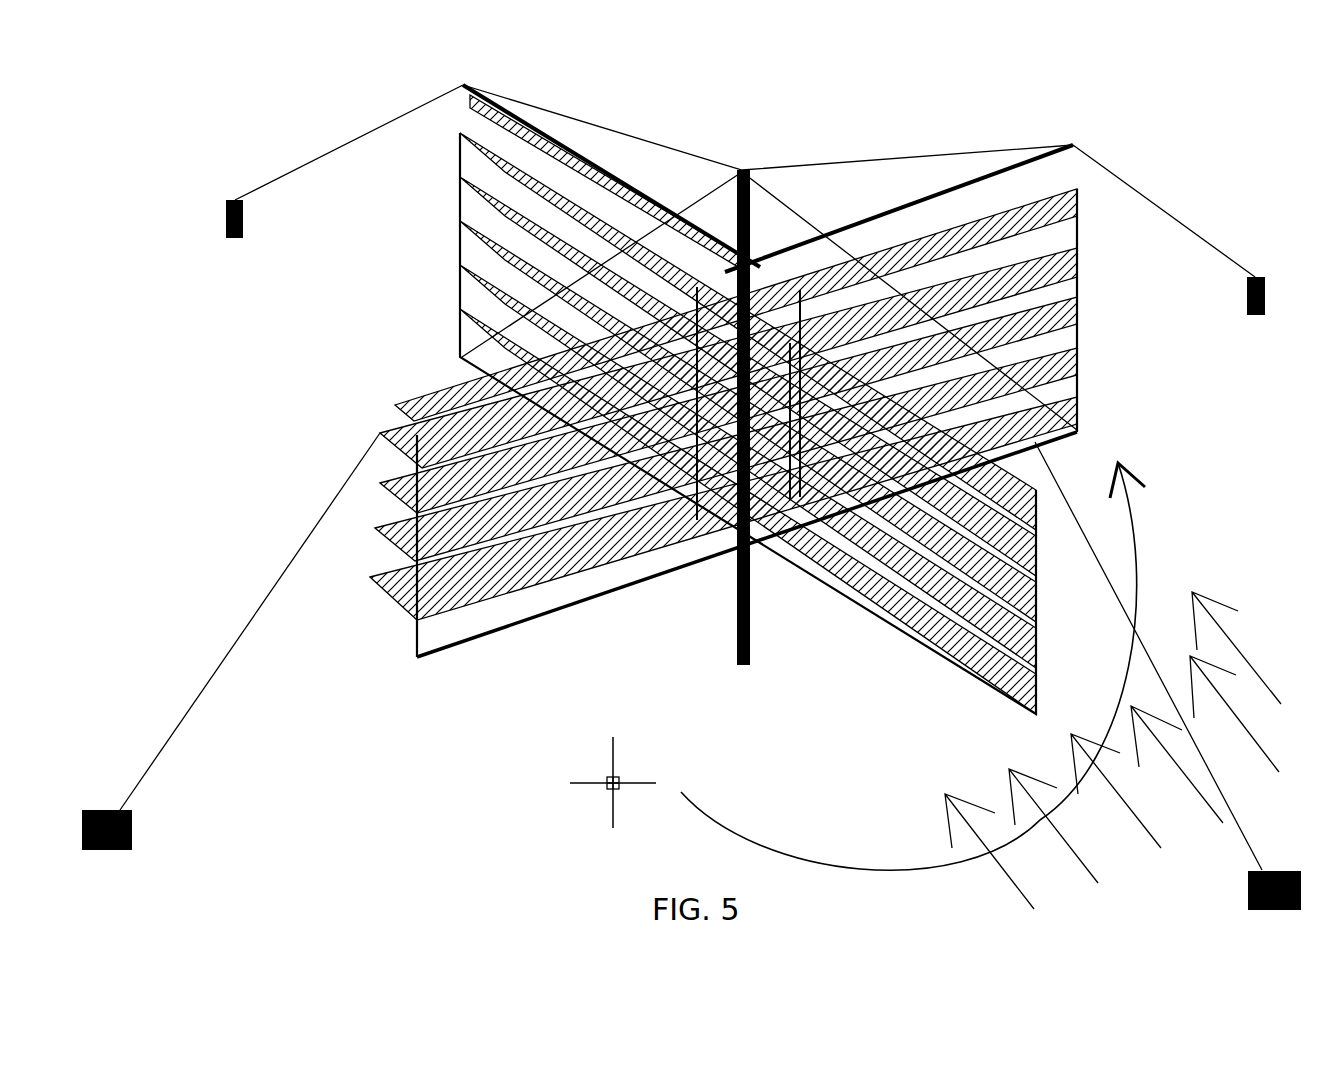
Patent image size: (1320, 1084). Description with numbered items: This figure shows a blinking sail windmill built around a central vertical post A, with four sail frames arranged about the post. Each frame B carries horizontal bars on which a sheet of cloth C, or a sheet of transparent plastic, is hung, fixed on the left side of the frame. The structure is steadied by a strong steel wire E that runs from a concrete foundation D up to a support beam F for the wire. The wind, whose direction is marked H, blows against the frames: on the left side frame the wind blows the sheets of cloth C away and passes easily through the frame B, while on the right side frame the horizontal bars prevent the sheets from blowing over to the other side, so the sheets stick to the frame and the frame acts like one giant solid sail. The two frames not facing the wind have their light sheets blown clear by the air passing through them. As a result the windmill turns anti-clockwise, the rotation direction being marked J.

The central vertical post A is at (745, 672).
The frame of the sail B is at (472, 646).
The sheet of cloth C is at (374, 596).
The concrete foundation D is at (138, 833).
The strong steel wire E is at (218, 680).
The support beam for the wire F is at (1082, 152).
The direction of wind H is at (1003, 883).
The rotation direction of blinking sail windmill J is at (1150, 520).